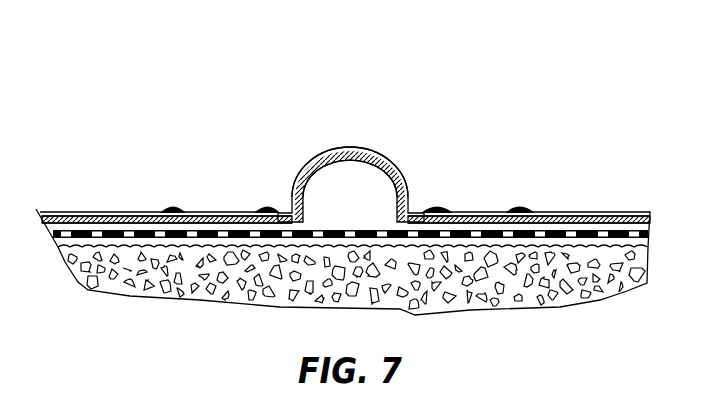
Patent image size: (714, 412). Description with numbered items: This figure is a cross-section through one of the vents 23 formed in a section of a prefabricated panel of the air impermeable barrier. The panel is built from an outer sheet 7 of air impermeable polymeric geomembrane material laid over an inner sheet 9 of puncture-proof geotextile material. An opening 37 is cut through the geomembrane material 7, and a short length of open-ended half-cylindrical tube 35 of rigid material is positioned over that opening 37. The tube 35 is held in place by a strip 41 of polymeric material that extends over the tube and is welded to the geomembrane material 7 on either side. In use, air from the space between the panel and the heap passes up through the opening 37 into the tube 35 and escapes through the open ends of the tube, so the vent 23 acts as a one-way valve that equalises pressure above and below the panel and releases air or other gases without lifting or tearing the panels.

The outer sheet 7 is at (92, 218).
The inner sheet 9 is at (140, 228).
The strip 41 is at (223, 212).
The vent 23 is at (343, 97).
The half-cylindrical tube 35 is at (367, 152).
The opening 37 is at (381, 214).